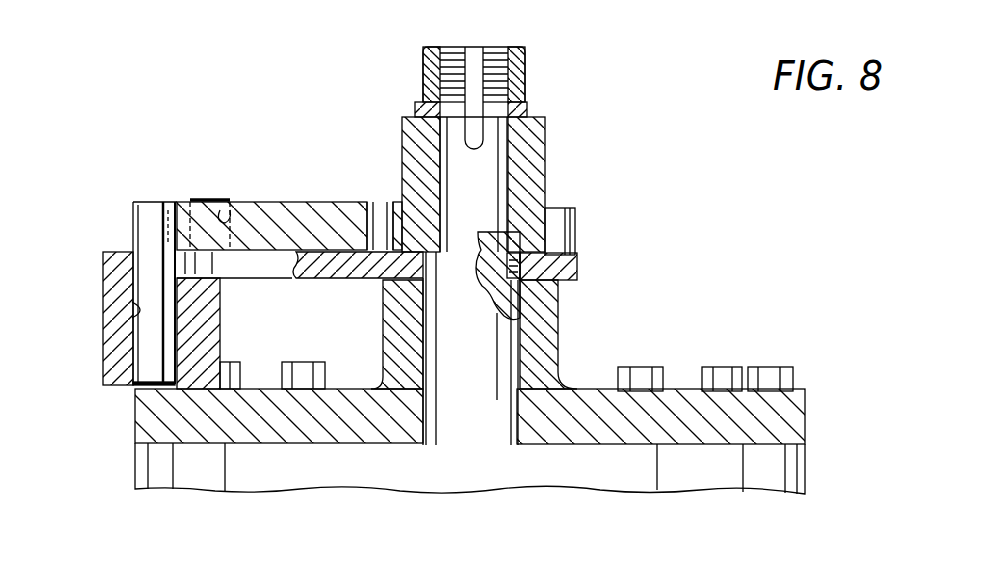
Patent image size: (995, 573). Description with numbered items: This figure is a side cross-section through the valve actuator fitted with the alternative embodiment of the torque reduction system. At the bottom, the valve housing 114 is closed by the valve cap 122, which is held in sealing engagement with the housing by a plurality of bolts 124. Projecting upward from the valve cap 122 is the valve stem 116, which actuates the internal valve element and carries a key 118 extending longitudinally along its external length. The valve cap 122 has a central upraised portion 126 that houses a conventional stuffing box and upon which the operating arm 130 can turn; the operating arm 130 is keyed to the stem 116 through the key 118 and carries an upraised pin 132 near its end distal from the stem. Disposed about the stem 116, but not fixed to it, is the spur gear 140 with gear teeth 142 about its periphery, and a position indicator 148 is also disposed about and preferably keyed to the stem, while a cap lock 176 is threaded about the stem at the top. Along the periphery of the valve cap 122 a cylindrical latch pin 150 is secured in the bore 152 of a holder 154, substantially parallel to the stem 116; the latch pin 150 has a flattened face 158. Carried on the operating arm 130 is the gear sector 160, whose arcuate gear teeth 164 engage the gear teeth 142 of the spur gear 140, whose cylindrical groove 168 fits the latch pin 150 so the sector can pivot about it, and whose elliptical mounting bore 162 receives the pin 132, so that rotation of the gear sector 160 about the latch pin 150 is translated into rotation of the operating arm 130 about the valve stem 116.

The valve housing 114 is at (793, 467).
The valve stem 116 is at (487, 373).
The key 118 is at (486, 139).
The valve cap 122 is at (793, 413).
The bolts 124 is at (723, 373).
The central upraised portion 126 is at (545, 313).
The operating arm 130 is at (575, 267).
The upraised pin 132 is at (203, 199).
The spur gear 140 is at (527, 173).
The gear teeth 142 is at (573, 220).
The position indicator 148 is at (527, 110).
The latch pin 150 is at (147, 268).
The bore 152 is at (130, 314).
The holder 154 is at (117, 358).
The flattened face 158 is at (172, 203).
The gear sector 160 is at (315, 202).
The elliptical mounting bore 162 is at (224, 200).
The gear teeth 164 is at (380, 202).
The cylindrical groove 168 is at (173, 230).
The cap lock 176 is at (525, 62).